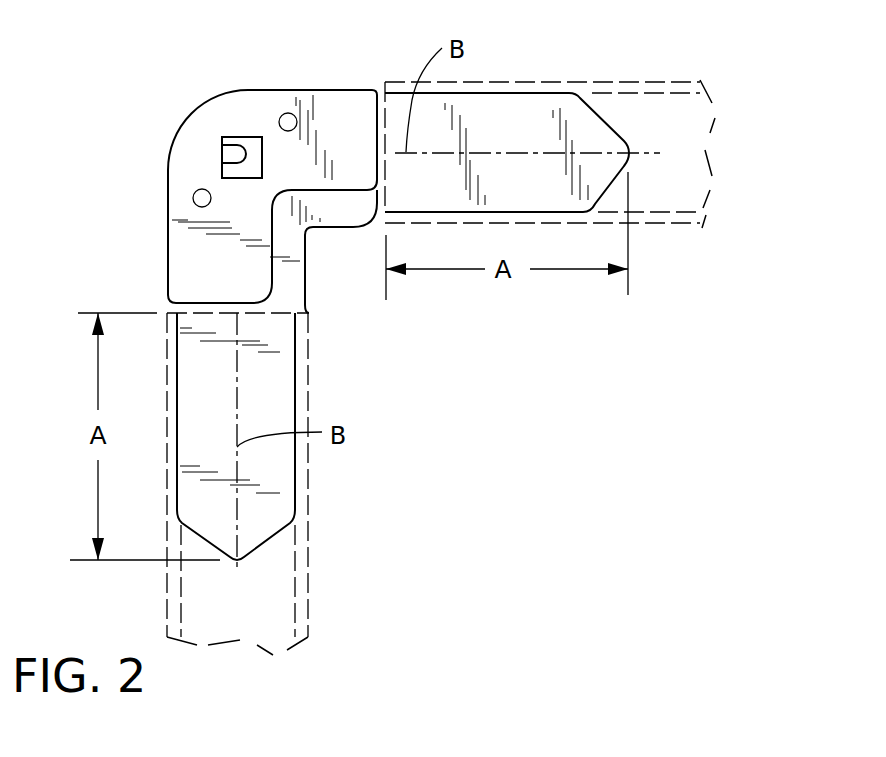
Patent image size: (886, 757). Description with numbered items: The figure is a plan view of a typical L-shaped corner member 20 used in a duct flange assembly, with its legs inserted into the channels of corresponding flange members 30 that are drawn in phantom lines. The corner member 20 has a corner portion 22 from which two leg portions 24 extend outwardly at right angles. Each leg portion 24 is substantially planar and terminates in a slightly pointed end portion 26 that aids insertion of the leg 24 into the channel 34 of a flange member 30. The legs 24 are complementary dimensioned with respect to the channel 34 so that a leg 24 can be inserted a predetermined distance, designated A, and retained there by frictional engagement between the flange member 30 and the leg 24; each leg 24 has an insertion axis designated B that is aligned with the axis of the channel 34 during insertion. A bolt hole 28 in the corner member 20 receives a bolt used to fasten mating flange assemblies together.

The L-shaped corner member 20 is at (258, 74).
The corner portion 22 is at (220, 273).
The leg portion 24 is at (473, 103).
The pointed end portion 26 is at (617, 127).
The bolt hole 28 is at (222, 163).
The flange member 30 is at (587, 82).
The channel 34 is at (690, 209).